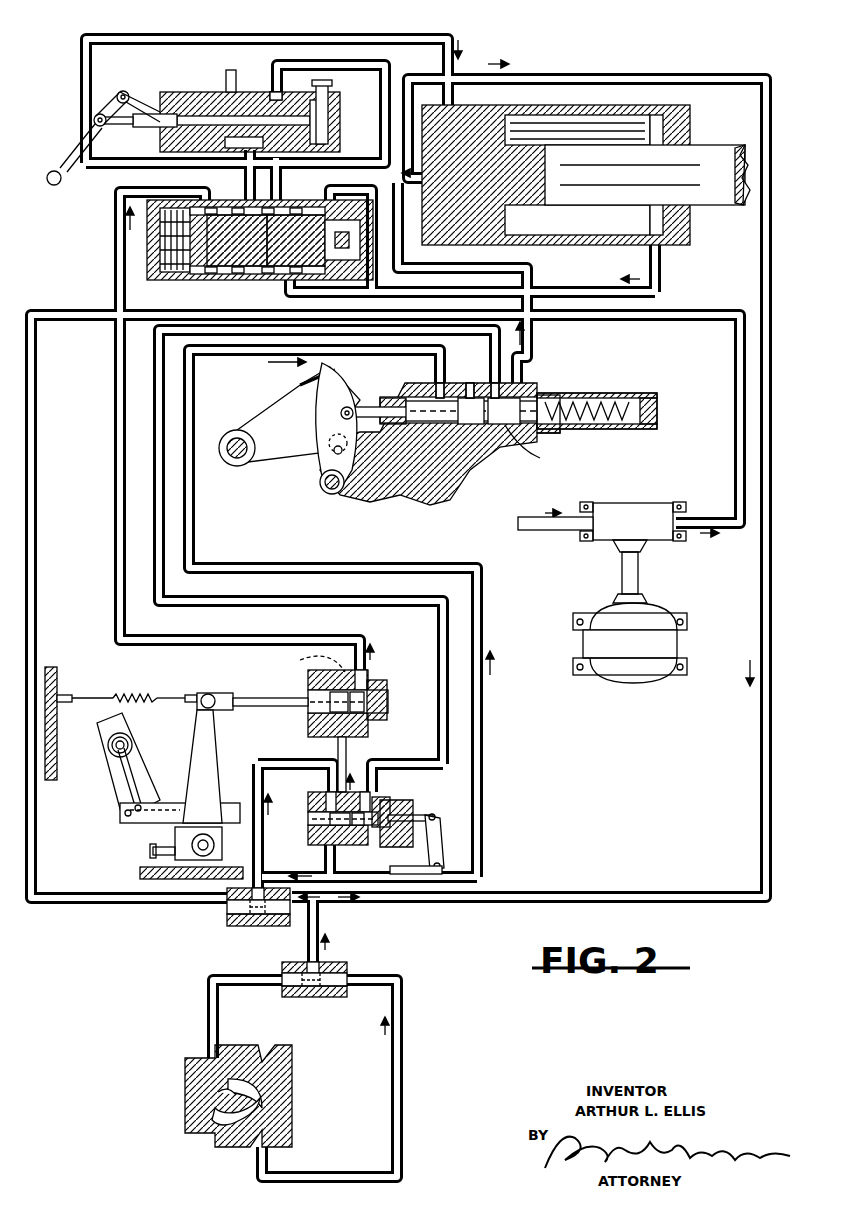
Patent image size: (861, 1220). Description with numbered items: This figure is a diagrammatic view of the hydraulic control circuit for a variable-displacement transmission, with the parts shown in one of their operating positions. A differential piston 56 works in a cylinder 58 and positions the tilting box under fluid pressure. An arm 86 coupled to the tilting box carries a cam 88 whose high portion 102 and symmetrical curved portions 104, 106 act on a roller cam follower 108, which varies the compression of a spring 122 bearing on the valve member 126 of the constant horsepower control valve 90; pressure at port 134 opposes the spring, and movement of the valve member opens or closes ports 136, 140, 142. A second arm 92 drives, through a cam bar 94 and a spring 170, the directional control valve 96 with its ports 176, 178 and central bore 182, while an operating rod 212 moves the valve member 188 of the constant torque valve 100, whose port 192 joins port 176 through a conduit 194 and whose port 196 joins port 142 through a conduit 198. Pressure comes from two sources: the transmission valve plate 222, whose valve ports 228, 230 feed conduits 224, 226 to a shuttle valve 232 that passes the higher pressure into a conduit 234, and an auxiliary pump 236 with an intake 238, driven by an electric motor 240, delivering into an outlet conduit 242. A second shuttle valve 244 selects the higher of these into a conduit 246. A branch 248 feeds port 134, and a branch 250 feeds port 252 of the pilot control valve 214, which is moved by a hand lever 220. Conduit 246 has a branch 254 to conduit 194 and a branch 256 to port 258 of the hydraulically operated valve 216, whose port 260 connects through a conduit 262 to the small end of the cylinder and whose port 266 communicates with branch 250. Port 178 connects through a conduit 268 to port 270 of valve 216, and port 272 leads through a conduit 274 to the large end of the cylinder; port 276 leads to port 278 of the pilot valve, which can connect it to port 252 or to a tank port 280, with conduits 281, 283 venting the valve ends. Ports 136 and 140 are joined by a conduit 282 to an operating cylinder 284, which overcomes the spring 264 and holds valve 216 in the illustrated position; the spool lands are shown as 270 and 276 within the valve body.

The differential piston 56 is at (540, 215).
The cylinder 58 is at (586, 164).
The arm 86 is at (291, 425).
The cam 88 is at (320, 425).
The constant horsepower control valve 90 is at (465, 419).
The arm 92 is at (176, 773).
The cam bar 94 is at (155, 824).
The directional control valve 96 is at (329, 700).
The constant torque valve 100 is at (371, 833).
The high portion 102 is at (345, 414).
The curved portion 104 is at (312, 383).
The curved portion 106 is at (328, 441).
The roller cam follower 108 is at (330, 451).
The spring 122 is at (612, 430).
The valve member 126 is at (534, 451).
The port 134 is at (438, 382).
The port 136 is at (471, 366).
The port 140 is at (490, 381).
The port 142 is at (535, 377).
The spring 170 is at (132, 747).
The port 176 is at (330, 731).
The port 178 is at (375, 686).
The bore 182 is at (308, 681).
The valve member 188 is at (352, 842).
The port 192 is at (348, 754).
The conduit 194 is at (328, 774).
The port 196 is at (374, 783).
The conduit 198 is at (203, 608).
The operating rod 212 is at (450, 864).
The pilot control valve 214 is at (202, 114).
The hydraulically operated valve 216 is at (216, 240).
The hand lever 220 is at (65, 166).
The valve plate 222 is at (207, 1090).
The conduit 224 is at (394, 1084).
The conduit 226 is at (207, 1014).
The valve port 228 is at (222, 1141).
The valve port 230 is at (232, 1068).
The shuttle valve 232 is at (290, 999).
The conduit 234 is at (324, 946).
The auxiliary pump 236 is at (594, 552).
The intake 238 is at (552, 533).
The electric motor 240 is at (630, 643).
The outlet conduit 242 is at (33, 422).
The shuttle valve 244 is at (248, 927).
The conduit 246 is at (268, 878).
The branch 248 is at (485, 758).
The branch 250 is at (392, 267).
The port 252 is at (277, 72).
The branch 254 is at (252, 765).
The branch 256 is at (628, 78).
The port 258 is at (282, 201).
The port 260 is at (283, 288).
The conduit 262 is at (663, 272).
The spring 264 is at (178, 285).
The port 266 is at (364, 199).
The conduit 268 is at (113, 464).
The port 270 is at (230, 240).
The port 272 is at (243, 192).
The conduit 274 is at (82, 67).
The port 276 is at (256, 210).
The port 278 is at (156, 131).
The port 280 is at (228, 74).
The conduit 281 is at (320, 84).
The conduit 282 is at (533, 353).
The conduit 283 is at (328, 120).
The operating cylinder 284 is at (344, 246).